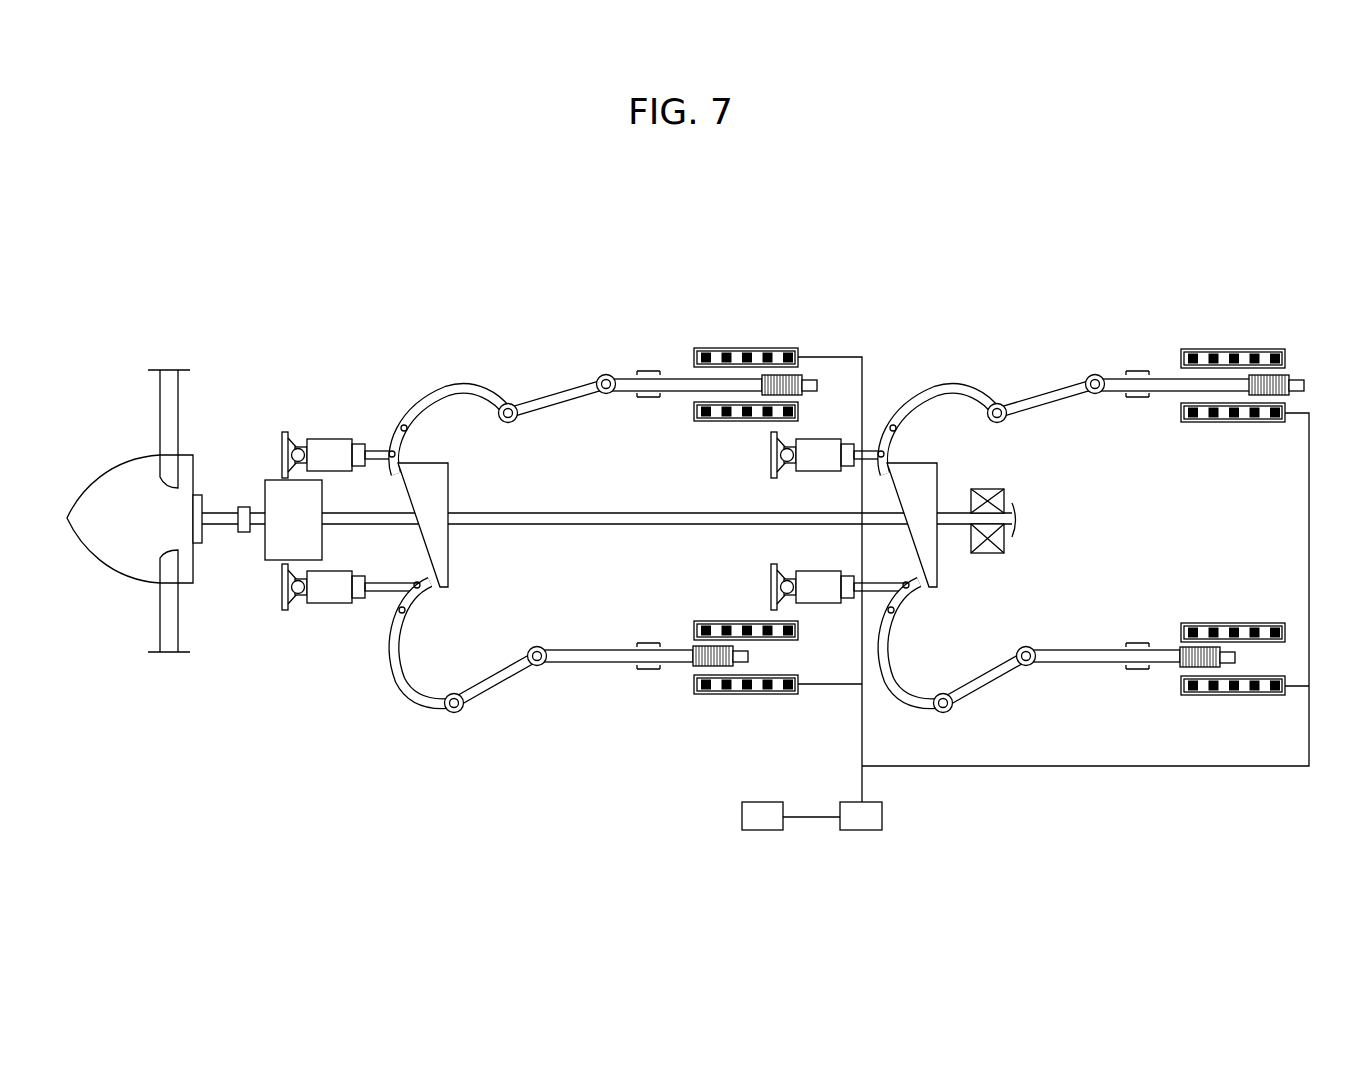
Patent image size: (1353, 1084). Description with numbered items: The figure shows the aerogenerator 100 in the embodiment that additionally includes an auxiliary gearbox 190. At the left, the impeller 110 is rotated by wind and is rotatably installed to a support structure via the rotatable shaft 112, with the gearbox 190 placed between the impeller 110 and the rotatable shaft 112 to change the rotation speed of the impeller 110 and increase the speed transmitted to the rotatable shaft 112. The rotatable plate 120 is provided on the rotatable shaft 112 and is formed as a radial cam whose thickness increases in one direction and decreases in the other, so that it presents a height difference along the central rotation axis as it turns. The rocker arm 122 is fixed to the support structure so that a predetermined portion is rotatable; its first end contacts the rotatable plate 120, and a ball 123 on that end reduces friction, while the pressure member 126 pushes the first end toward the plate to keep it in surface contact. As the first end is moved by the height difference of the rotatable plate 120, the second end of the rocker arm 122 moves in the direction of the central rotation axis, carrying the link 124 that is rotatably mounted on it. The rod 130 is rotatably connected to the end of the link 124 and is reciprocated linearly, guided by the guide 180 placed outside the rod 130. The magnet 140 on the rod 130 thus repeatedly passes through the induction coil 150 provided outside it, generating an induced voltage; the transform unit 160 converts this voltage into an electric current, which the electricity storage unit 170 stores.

The aerogenerator 100 is at (360, 315).
The impeller 110 is at (127, 471).
The rotatable shaft 112 is at (708, 526).
The rotatable plate 120 is at (442, 548).
The rocker arm 122 is at (447, 386).
The ball 123 is at (440, 588).
The link 124 is at (548, 398).
The pressure member 126 is at (333, 445).
The rod 130 is at (609, 376).
The magnet 140 is at (806, 374).
The induction coil 150 is at (741, 347).
The transform unit 160 is at (862, 832).
The electricity storage unit 170 is at (762, 832).
The guide 180 is at (649, 400).
The gearbox 190 is at (272, 545).